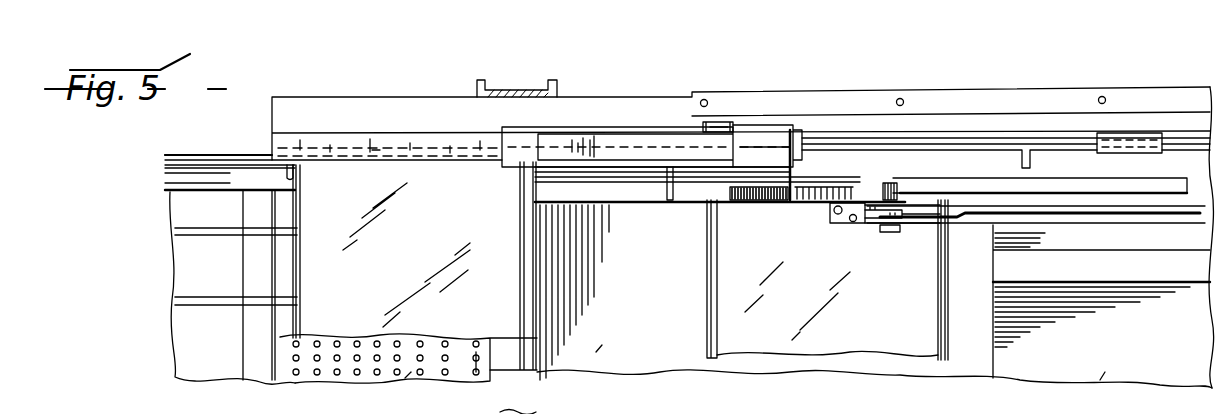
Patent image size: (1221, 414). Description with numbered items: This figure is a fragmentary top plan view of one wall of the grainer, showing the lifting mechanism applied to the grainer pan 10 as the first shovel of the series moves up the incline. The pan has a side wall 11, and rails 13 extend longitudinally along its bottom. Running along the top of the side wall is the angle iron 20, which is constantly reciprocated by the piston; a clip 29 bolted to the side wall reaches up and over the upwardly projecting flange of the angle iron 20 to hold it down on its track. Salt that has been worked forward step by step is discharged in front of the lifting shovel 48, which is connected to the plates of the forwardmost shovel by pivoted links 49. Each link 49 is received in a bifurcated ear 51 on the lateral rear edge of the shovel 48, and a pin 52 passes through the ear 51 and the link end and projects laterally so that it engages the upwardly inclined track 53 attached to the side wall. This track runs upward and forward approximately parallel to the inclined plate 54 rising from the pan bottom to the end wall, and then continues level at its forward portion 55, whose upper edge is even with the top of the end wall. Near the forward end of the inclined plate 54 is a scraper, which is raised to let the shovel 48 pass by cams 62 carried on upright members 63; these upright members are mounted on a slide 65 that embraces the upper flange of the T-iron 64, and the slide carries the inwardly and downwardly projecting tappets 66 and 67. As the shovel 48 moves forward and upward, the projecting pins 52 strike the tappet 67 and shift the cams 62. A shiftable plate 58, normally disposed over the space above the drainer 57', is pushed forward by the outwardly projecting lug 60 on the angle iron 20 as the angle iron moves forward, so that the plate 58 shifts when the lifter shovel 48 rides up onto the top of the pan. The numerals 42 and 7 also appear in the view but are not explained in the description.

The side wall 11 is at (440, 110).
The T-iron 64 is at (390, 132).
The cam 62 is at (625, 138).
The upright member 63 is at (723, 120).
The slide 65 is at (773, 126).
The clip 29 is at (1133, 140).
The lug 60 is at (1035, 167).
The angle iron 20 is at (175, 177).
The shiftable plate 58 is at (352, 325).
The plate 42 is at (500, 353).
The drainer 57' is at (420, 393).
The forward extension of track 55 is at (638, 208).
The tappet 67 is at (672, 206).
The inclined track 53 is at (755, 205).
The pin 52 is at (900, 183).
The ear 51 is at (836, 226).
The pivoted link 49 is at (1150, 222).
The lifting shovel 48 is at (712, 312).
The tappet 66 is at (808, 208).
The rail 13 is at (1140, 272).
The inclined plate 54 is at (598, 352).
The grainer pan 10 is at (1100, 378).
The base 7 is at (860, 409).